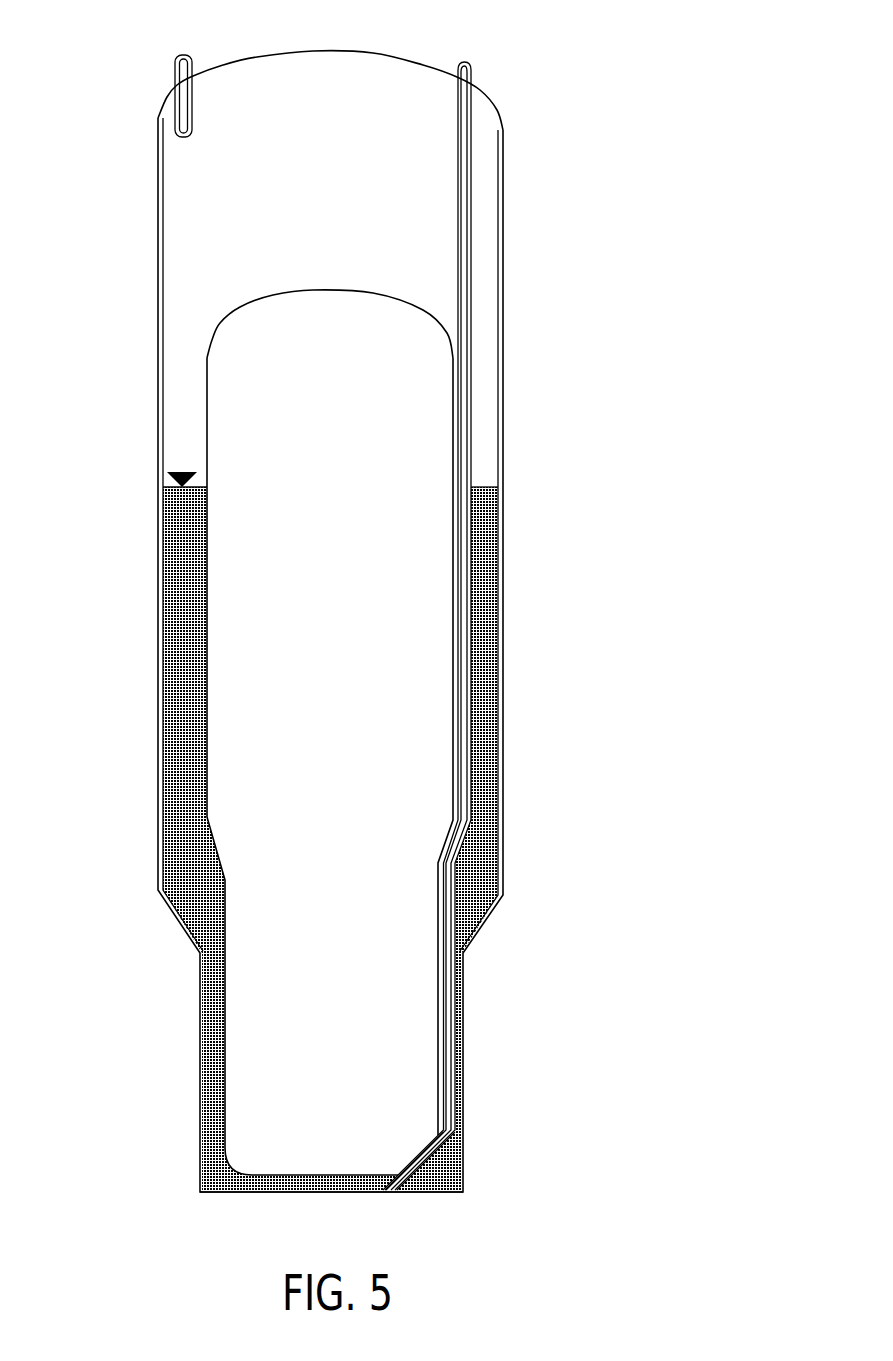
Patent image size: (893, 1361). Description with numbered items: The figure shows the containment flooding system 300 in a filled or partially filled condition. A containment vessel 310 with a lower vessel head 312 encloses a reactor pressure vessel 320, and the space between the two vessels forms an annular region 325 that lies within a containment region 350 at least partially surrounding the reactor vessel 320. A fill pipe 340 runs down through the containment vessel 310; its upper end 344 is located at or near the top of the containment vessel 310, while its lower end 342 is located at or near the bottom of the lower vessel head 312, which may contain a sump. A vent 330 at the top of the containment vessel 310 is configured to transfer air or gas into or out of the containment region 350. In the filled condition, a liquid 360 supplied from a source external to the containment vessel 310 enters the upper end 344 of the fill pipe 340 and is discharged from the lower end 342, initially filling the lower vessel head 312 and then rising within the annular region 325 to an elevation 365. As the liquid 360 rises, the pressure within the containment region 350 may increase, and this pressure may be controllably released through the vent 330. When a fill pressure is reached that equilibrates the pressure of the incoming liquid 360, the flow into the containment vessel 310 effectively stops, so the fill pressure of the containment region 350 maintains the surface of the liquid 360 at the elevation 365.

The containment flooding system 300 is at (632, 84).
The containment vessel 310 is at (160, 272).
The lower vessel head 312 is at (307, 1192).
The reactor pressure vessel 320 is at (283, 295).
The annular region 325 is at (483, 440).
The vent 330 is at (175, 80).
The fill pipe 340 is at (467, 288).
The lower end 342 is at (410, 1175).
The upper end 344 is at (471, 75).
The containment region 350 is at (348, 143).
The liquid 360 is at (185, 710).
The elevation 365 is at (163, 486).